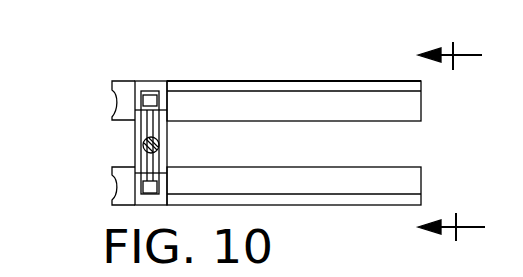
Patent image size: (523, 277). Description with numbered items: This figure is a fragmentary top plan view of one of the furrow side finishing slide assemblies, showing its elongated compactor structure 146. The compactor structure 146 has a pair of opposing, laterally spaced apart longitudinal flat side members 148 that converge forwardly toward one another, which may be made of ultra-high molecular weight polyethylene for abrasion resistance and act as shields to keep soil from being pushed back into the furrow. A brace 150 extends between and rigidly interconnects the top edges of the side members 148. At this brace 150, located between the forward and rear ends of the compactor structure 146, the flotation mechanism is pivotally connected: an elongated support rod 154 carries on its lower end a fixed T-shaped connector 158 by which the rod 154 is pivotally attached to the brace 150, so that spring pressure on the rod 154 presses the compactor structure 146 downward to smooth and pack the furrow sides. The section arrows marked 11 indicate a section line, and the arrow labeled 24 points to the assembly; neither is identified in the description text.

The section line 11- 11 is at (453, 143).
The loading assembly 24 is at (294, 116).
The compactor structure 146 is at (196, 80).
The longitudinal flat side members 148 is at (318, 172).
The brace 150 is at (168, 151).
The support rod 154 is at (137, 151).
The T-shaped connector 158 is at (140, 139).